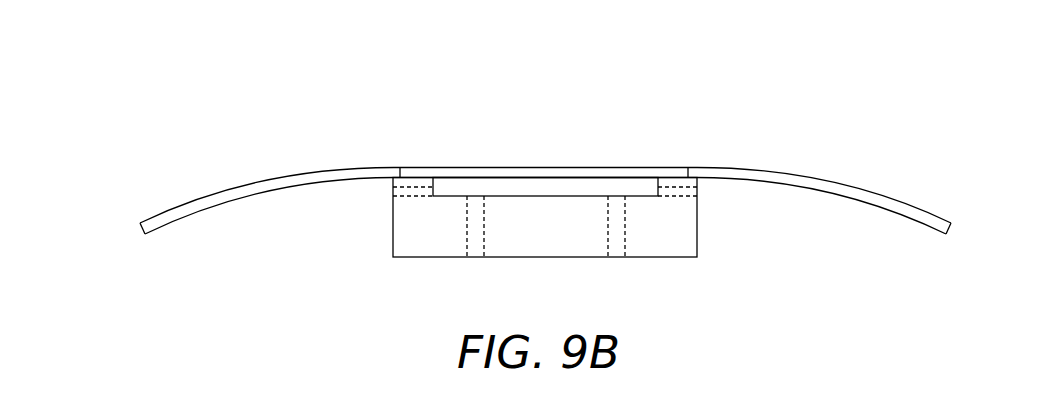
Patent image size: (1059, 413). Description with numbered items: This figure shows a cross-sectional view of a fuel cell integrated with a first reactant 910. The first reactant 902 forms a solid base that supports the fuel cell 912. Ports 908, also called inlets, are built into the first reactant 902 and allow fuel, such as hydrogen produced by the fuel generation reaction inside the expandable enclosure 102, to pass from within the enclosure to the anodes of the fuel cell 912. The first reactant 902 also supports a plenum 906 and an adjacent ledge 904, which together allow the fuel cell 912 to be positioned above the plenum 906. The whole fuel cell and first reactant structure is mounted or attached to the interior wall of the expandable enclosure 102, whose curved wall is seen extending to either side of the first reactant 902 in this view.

The expandable enclosure 102 is at (827, 181).
The first reactant 902 is at (690, 232).
The ledge 904 is at (400, 167).
The plenum 906 is at (505, 196).
The ports 908 is at (475, 245).
The fuel cell integrated with a first reactant 910 is at (790, 87).
The fuel cell 912 is at (616, 176).